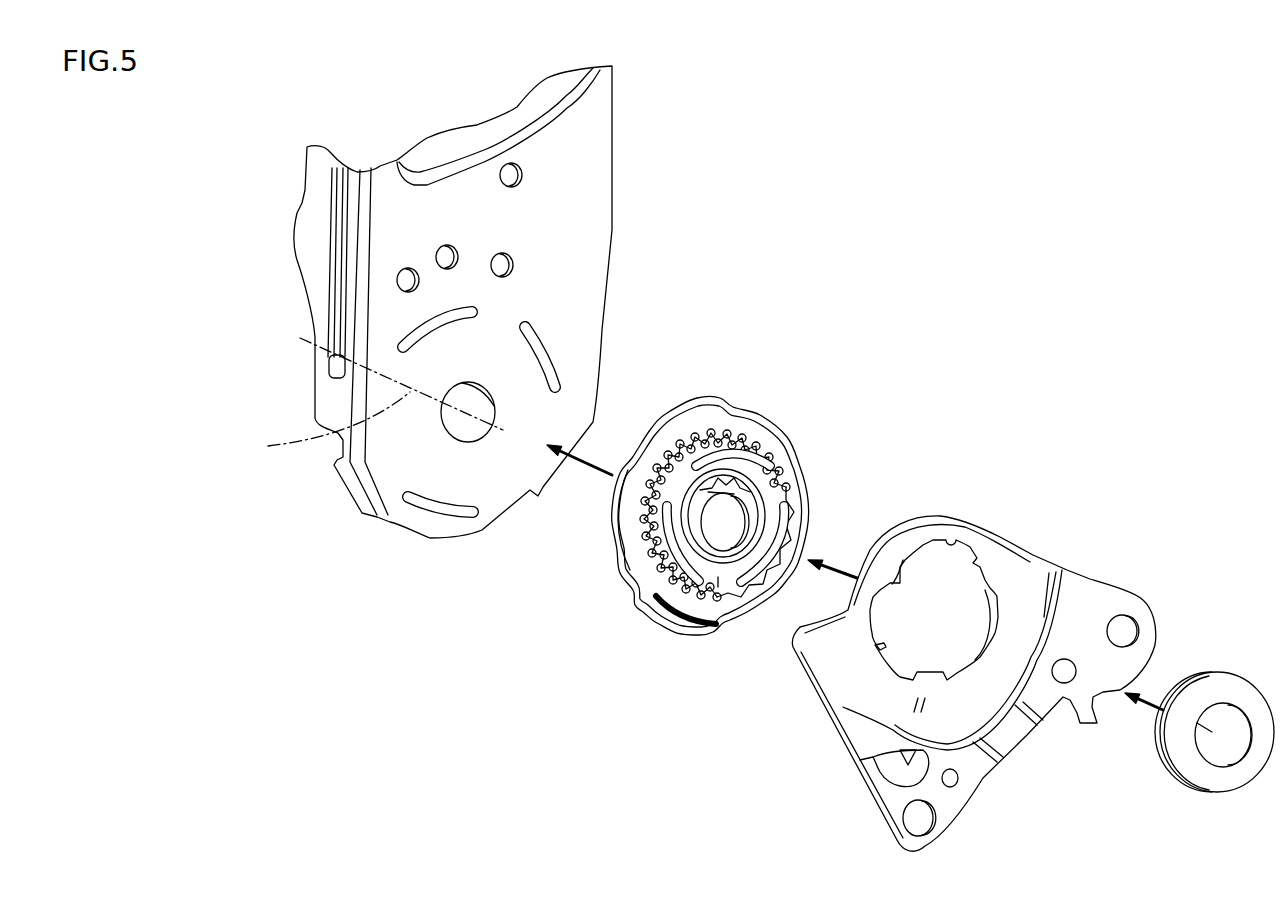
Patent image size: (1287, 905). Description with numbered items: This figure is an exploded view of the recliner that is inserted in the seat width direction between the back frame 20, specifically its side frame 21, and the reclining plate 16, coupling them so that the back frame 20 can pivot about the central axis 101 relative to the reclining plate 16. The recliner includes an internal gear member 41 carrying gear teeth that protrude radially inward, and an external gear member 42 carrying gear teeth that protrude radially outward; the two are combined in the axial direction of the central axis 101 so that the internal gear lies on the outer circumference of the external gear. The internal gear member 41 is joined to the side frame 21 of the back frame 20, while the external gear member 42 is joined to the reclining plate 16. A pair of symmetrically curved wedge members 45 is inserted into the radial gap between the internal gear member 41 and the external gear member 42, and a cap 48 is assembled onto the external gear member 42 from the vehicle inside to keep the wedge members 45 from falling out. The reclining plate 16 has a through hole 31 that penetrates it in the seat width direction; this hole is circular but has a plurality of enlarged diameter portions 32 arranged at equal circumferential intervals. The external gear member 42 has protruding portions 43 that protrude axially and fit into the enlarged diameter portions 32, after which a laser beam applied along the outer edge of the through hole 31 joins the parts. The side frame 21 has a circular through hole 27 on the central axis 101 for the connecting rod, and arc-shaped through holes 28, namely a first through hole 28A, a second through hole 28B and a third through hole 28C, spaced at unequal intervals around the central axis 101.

The back frame 20 is at (282, 163).
The side frame 21 is at (596, 146).
The through hole 27 is at (497, 396).
The through holes 28 is at (449, 405).
The first through hole 28A is at (437, 323).
The second through hole 28B is at (447, 507).
The third through hole 28C is at (537, 343).
The central axis 101 is at (368, 400).
The internal gear member 41 is at (637, 537).
The external gear member 42 is at (803, 478).
The protruding portions 43 is at (735, 457).
The wedge members 45 is at (700, 487).
The reclining plate 16 is at (842, 688).
The through hole 31 is at (905, 572).
The enlarged diameter portions 32 is at (952, 538).
The cap 48 is at (1222, 690).